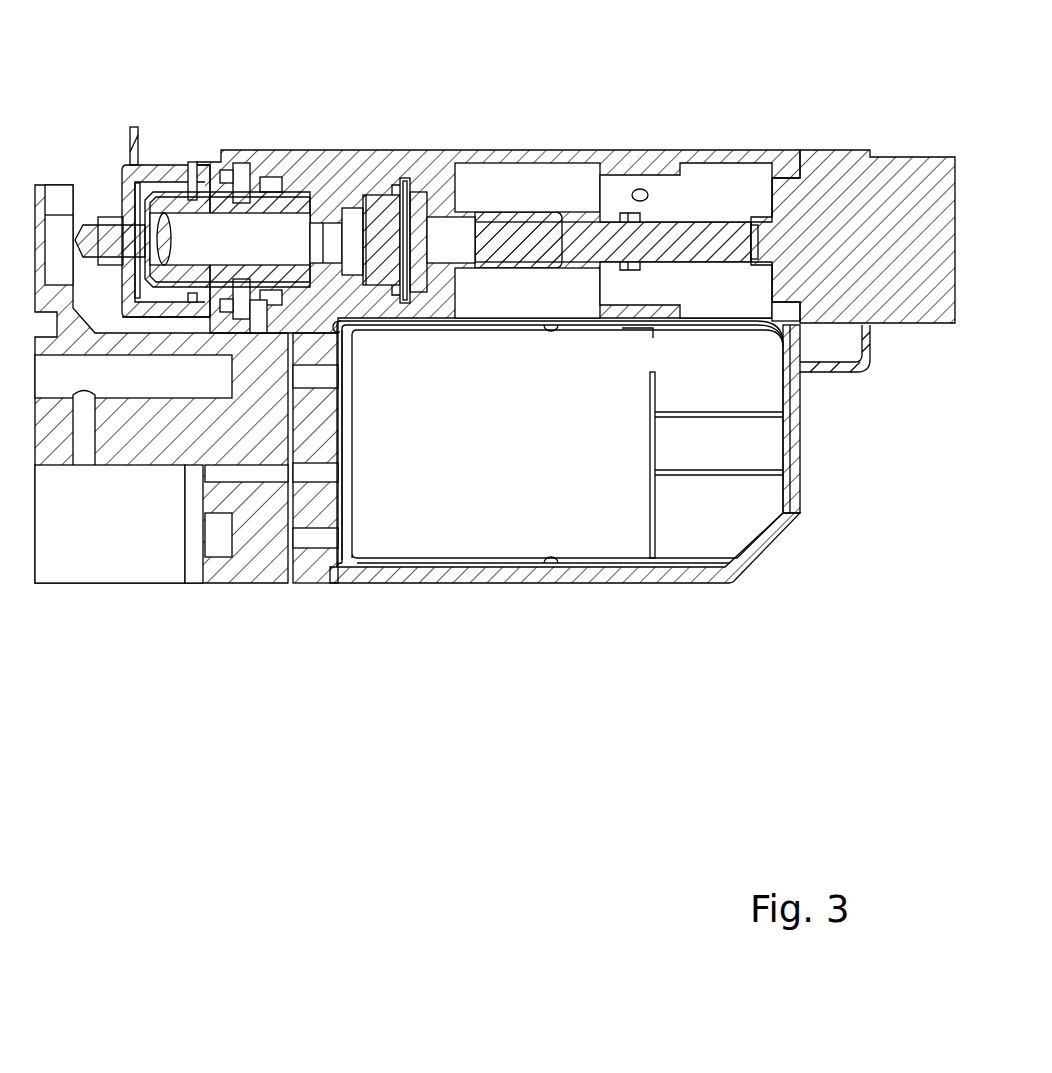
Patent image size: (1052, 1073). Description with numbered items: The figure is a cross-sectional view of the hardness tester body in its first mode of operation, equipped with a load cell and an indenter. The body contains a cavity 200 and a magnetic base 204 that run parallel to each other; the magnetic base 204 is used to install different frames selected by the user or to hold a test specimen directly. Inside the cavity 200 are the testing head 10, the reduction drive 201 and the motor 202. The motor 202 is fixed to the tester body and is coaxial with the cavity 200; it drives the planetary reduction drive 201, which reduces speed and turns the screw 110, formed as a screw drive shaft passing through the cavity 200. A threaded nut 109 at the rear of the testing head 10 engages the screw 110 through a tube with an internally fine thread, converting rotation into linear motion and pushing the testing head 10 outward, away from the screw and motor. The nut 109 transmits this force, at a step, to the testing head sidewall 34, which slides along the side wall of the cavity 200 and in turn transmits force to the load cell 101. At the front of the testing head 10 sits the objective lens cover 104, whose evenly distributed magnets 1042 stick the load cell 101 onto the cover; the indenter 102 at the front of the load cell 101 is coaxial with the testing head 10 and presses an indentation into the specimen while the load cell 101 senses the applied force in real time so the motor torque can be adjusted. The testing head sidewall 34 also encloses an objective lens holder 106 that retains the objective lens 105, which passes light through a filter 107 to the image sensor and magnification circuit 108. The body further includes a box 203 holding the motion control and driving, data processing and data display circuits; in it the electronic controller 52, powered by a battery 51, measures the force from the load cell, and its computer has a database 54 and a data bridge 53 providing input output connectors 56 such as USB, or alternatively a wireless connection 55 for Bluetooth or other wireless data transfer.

The testing head 10 is at (322, 225).
The testing head sidewall 34 is at (350, 310).
The battery 51 is at (408, 530).
The electronic controller 52 is at (512, 523).
The data bridge 53 is at (620, 507).
The database 54 is at (638, 497).
The wireless connection 55 is at (377, 510).
The input output connectors 56 is at (748, 372).
The load cell 101 is at (130, 148).
The indenter 102 is at (87, 232).
The objective lens cover 104 is at (190, 150).
The objective lens 105 is at (240, 223).
The objective lens holder 106 is at (283, 150).
The filter 107 is at (345, 215).
The image sensor and magnification circuit 108 is at (400, 185).
The nut 109 is at (470, 172).
The screw 110 is at (657, 262).
The cavity 200 is at (533, 168).
The reduction drive 201 is at (670, 210).
The motor 202 is at (837, 173).
The box 203 is at (543, 503).
The magnetic base 204 is at (145, 447).
The magnets 1042 is at (188, 297).